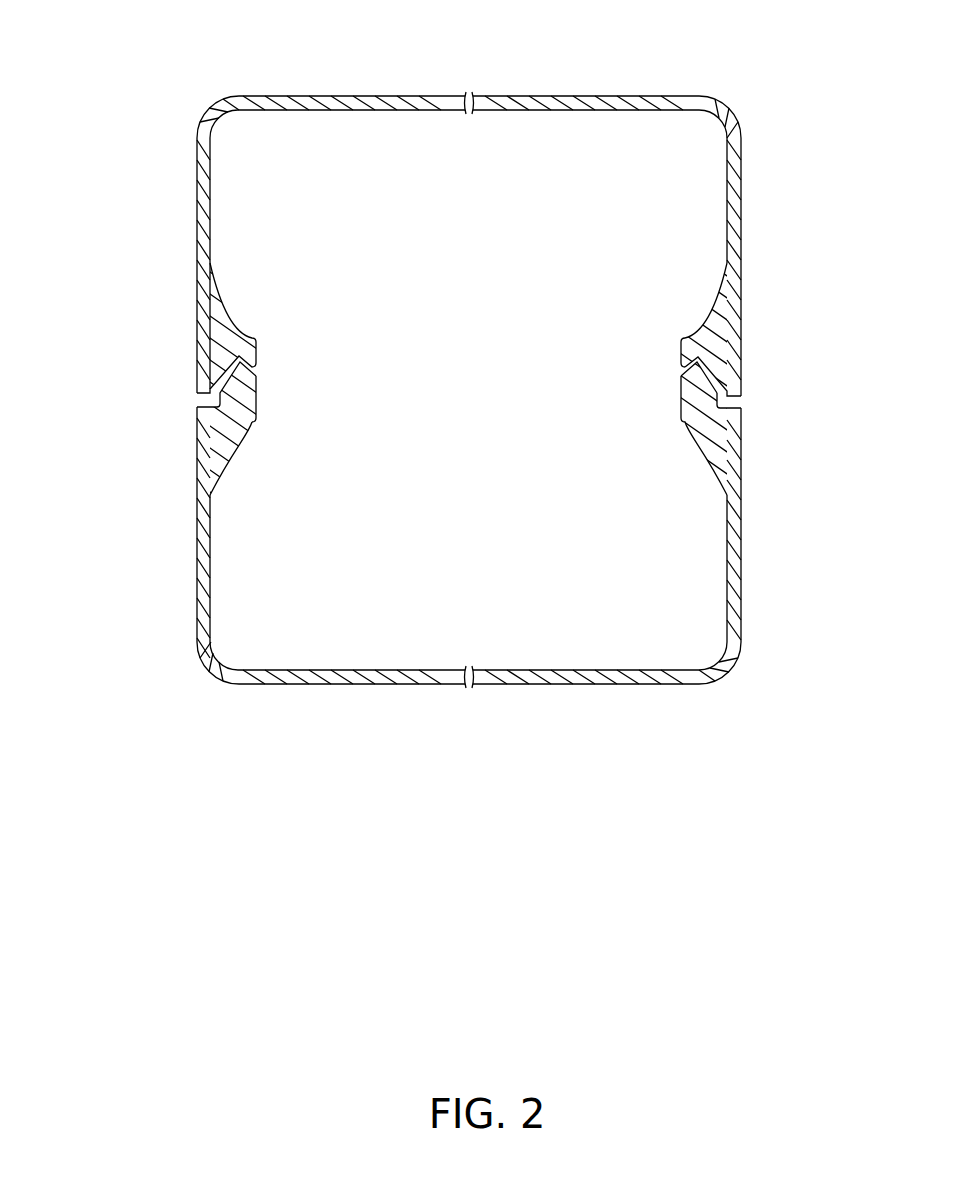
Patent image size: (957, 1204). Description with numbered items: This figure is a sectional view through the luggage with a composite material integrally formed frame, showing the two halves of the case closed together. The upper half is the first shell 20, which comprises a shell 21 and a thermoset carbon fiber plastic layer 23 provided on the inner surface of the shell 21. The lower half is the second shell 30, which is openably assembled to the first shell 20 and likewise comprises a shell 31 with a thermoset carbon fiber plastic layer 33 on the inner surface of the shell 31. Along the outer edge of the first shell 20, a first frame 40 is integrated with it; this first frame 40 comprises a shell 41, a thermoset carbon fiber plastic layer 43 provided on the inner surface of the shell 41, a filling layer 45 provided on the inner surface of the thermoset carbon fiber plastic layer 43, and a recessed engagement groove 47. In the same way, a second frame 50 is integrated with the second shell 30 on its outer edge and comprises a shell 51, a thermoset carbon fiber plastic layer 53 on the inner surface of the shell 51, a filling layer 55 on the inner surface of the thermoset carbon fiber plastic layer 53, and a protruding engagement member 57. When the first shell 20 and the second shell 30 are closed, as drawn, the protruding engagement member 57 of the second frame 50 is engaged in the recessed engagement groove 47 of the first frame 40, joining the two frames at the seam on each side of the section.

The first shell 20 is at (483, 200).
The shell 21 is at (553, 96).
The thermoset carbon fiber plastic layer 23 is at (631, 106).
The second shell 30 is at (509, 585).
The shell 31 is at (572, 685).
The thermoset carbon fiber plastic layer 33 is at (650, 673).
The first frame 40 is at (762, 396).
The shell 41 is at (740, 332).
The thermoset carbon fiber plastic layer 43 is at (730, 312).
The filling layer 45 is at (737, 365).
The recessed engagement groove 47 is at (735, 462).
The second frame 50 is at (168, 396).
The shell 51 is at (200, 445).
The thermoset carbon fiber plastic layer 53 is at (103, 358).
The filling layer 55 is at (225, 419).
The protruding engagement member 57 is at (207, 385).